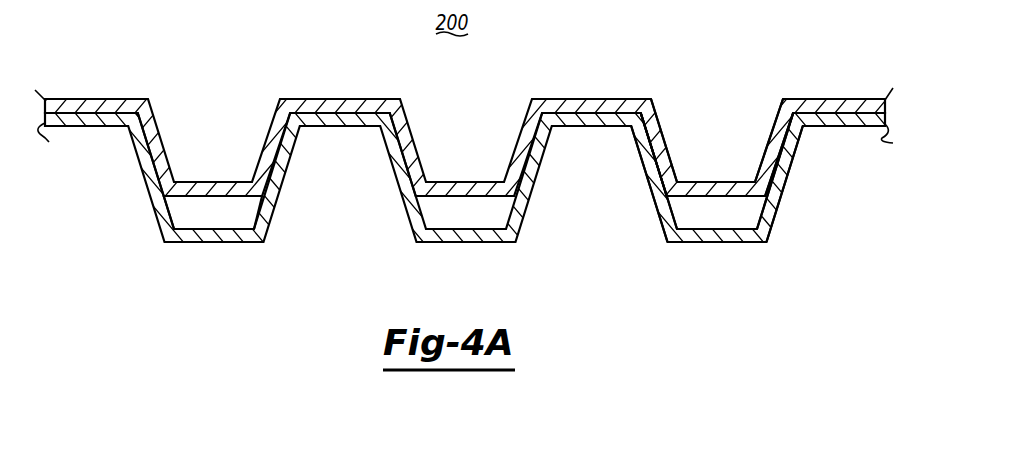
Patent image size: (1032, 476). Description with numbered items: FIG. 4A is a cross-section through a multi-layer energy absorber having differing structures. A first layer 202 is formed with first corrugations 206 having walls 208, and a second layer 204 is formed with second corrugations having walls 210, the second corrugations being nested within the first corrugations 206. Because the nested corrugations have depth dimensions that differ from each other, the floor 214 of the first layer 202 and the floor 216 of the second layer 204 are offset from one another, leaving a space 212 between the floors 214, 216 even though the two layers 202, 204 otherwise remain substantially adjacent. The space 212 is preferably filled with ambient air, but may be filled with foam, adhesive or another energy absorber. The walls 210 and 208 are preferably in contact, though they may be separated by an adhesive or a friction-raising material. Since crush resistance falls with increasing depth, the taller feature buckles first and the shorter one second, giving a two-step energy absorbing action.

The first layer 202 is at (833, 126).
The second layer 204 is at (843, 99).
The first corrugations 206 is at (718, 242).
The walls of the first corrugations 208 is at (712, 183).
The walls of the second corrugations 210 is at (663, 135).
The space 212 is at (192, 212).
The floor of the first layer 214 is at (232, 242).
The floor of the second layer 216 is at (213, 182).